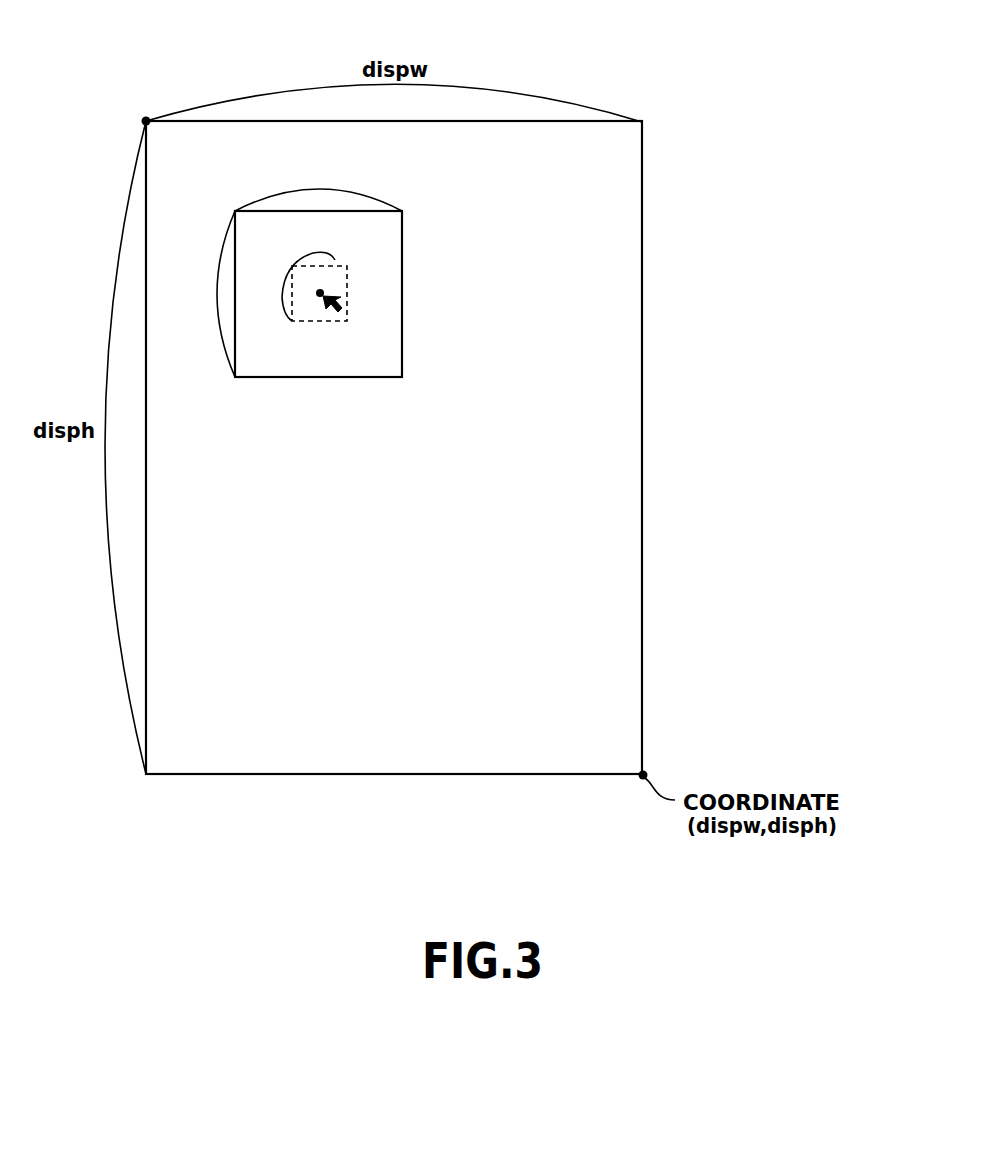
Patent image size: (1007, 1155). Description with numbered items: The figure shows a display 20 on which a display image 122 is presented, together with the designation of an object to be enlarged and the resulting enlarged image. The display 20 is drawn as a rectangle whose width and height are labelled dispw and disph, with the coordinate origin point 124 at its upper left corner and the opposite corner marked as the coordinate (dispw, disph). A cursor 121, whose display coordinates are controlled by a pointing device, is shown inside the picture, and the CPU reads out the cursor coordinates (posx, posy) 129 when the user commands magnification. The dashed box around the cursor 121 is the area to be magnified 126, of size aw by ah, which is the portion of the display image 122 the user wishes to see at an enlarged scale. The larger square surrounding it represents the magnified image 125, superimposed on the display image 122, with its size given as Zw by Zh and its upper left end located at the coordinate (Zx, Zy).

The display 20 is at (525, 447).
The display image 122 is at (634, 570).
The coordinate origin point 124 is at (146, 121).
The magnified image 125 is at (290, 378).
The area to be magnified 126 is at (333, 258).
The coordinates (posx, posy) 129 is at (322, 290).
The cursor 121 is at (342, 311).